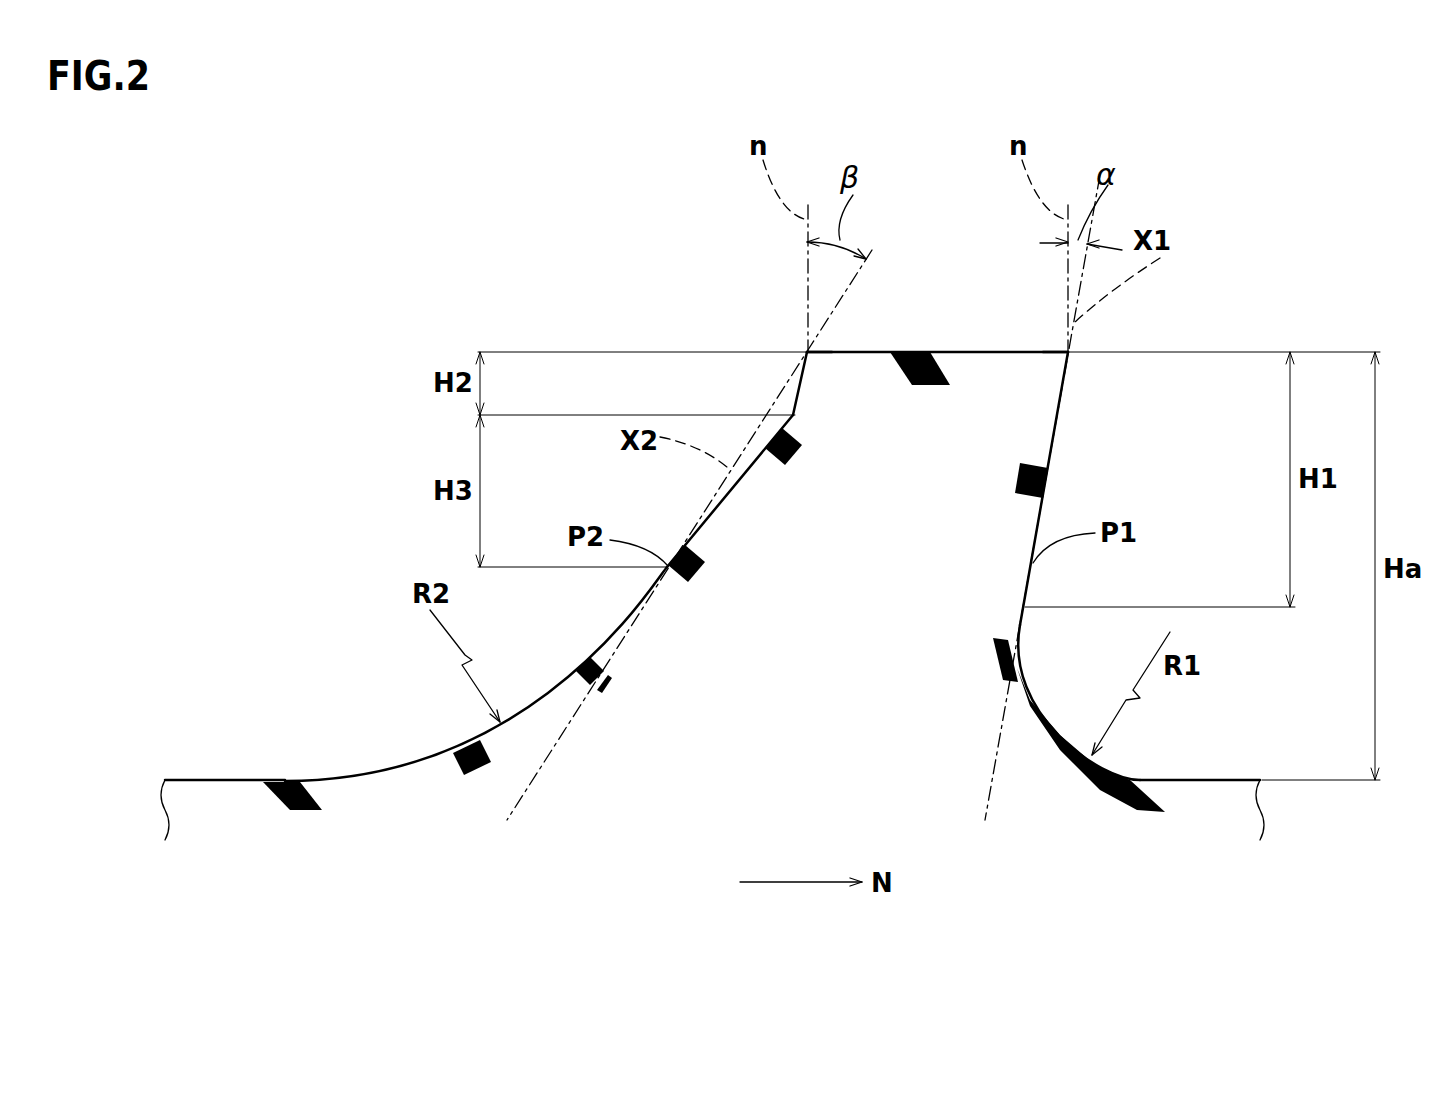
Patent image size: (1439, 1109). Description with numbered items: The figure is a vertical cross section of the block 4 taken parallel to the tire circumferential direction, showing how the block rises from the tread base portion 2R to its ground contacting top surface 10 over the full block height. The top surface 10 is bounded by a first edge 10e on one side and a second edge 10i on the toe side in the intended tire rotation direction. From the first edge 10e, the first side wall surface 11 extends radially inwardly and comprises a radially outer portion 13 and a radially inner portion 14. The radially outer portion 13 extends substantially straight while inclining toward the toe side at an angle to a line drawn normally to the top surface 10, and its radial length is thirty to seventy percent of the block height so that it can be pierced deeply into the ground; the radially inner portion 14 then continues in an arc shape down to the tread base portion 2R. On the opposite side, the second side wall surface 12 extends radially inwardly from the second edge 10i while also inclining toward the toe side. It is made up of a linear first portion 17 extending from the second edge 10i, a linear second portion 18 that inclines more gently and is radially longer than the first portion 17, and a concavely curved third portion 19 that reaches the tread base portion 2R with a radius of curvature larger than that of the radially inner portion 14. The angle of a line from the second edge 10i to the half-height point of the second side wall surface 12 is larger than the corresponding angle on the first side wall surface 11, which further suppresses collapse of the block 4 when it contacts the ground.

The tread base portion 2R is at (222, 780).
The block 4 is at (759, 527).
The ground contacting top surface 10 is at (966, 283).
The second edge 10i is at (808, 352).
The first edge 10e is at (1070, 352).
The first side wall surface 11 is at (1148, 566).
The second side wall surface 12 is at (546, 509).
The radially outer portion 13 is at (1056, 437).
The radially inner portion 14 is at (1040, 697).
The first portion 17 is at (736, 383).
The second portion 18 is at (722, 502).
The third portion 19 is at (550, 686).